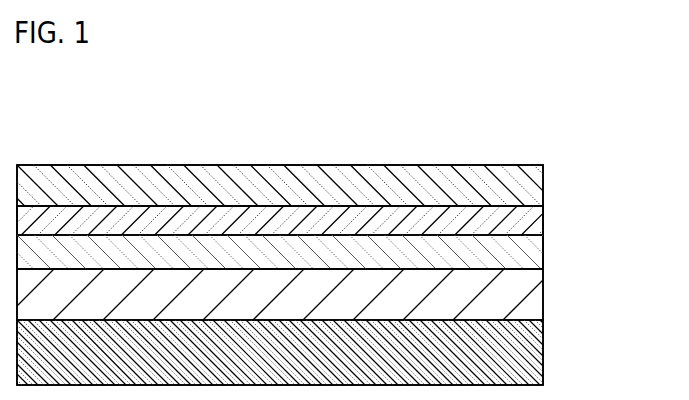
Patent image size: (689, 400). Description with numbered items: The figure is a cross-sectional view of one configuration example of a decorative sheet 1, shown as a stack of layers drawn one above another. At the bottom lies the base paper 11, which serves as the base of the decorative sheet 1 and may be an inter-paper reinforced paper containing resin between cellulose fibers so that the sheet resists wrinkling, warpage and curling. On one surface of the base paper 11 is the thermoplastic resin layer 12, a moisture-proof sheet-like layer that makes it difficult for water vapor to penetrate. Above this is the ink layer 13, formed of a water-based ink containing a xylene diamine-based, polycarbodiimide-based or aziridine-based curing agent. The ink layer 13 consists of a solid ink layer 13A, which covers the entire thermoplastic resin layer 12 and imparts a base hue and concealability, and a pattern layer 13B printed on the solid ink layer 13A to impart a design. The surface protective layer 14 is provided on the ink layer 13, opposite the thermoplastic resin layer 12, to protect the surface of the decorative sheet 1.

The decorative sheet 1 is at (429, 138).
The base paper 11 is at (527, 372).
The thermoplastic resin layer 12 is at (527, 297).
The ink layer 13 is at (342, 237).
The solid ink layer 13A is at (527, 252).
The pattern layer 13B is at (527, 222).
The surface protective layer 14 is at (527, 180).